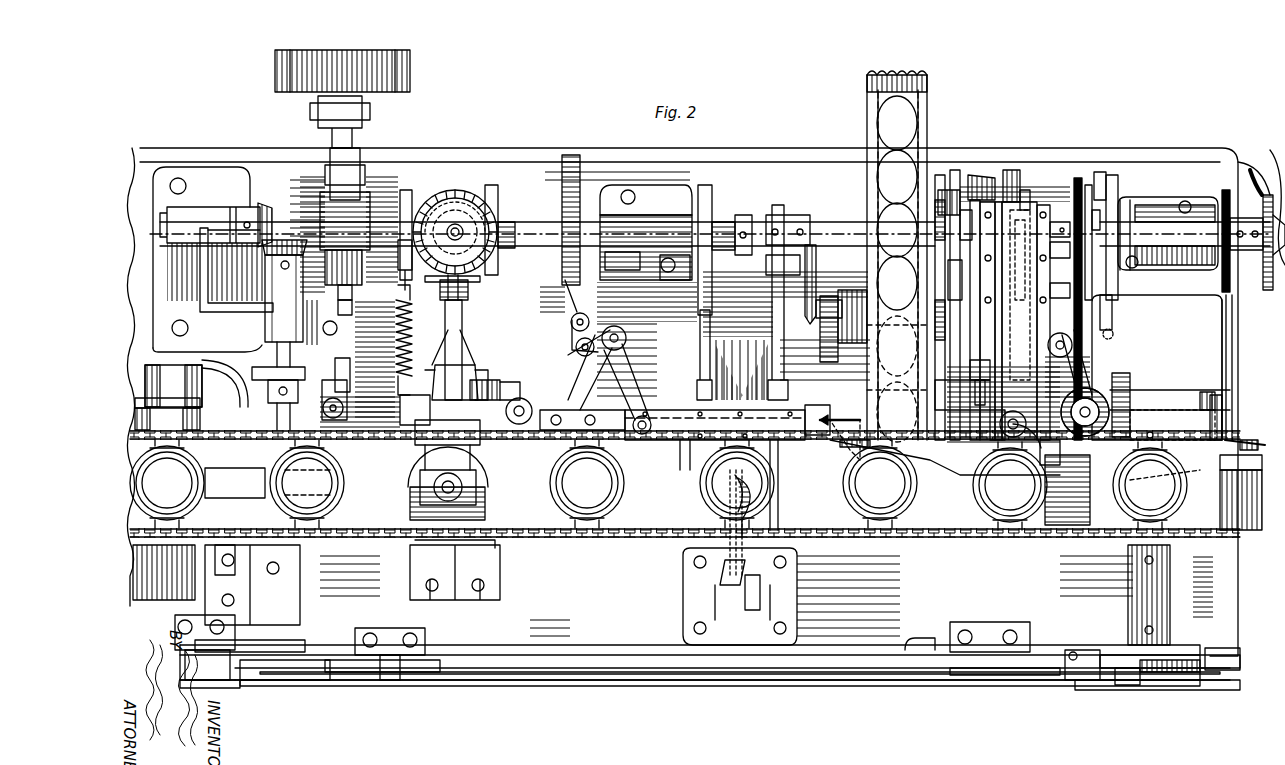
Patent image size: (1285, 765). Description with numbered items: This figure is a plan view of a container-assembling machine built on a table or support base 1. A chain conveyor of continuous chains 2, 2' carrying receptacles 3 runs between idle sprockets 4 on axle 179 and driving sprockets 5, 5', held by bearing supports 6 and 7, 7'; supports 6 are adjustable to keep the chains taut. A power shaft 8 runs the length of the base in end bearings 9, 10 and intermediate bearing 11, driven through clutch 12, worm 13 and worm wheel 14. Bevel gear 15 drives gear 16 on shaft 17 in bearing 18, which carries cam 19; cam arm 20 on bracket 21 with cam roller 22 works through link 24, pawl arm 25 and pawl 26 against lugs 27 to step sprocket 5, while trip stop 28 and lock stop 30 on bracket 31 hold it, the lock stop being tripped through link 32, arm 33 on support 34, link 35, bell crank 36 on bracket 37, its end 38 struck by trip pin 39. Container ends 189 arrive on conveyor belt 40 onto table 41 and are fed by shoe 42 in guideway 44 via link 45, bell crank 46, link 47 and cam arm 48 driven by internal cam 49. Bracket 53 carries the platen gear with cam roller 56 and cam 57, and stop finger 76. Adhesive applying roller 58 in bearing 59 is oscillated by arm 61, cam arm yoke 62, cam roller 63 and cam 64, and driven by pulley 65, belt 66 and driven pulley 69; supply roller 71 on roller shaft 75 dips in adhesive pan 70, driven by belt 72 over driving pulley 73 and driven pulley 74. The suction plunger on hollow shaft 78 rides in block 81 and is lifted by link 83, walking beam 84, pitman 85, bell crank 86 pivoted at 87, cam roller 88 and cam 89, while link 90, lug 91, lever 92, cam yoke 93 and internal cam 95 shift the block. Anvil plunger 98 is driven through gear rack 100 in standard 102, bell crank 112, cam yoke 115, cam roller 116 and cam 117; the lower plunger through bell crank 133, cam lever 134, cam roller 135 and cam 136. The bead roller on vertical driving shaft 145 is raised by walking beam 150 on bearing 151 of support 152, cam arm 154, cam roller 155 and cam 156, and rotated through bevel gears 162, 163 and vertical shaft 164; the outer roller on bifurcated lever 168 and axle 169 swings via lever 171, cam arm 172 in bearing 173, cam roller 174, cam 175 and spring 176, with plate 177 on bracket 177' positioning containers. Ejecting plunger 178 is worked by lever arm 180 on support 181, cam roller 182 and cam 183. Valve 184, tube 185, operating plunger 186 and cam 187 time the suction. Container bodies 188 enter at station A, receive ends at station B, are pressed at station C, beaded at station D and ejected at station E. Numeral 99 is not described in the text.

The table or support base 1 is at (657, 640).
The continuous chain 2 is at (686, 508).
The receptacle 3 is at (625, 483).
The idle sprocket 4 is at (150, 415).
The driving sprocket 5 is at (1241, 525).
The bearing support 6 is at (165, 372).
The bearing support 7 is at (1185, 595).
The power shaft 8 is at (515, 230).
The end bearing 9 is at (213, 215).
The end bearing 10 is at (1165, 220).
The intermediate bearing 11 is at (624, 190).
The clutch 12 is at (410, 70).
The worm 13 is at (370, 180).
The worm wheel 14 is at (355, 268).
The bevel gear 15 is at (262, 208).
The gear 16 is at (288, 240).
The shaft 17 is at (275, 345).
The bearing 18 is at (268, 283).
The cam 19 is at (290, 680).
The cam arm 20 is at (200, 680).
The bracket 21 is at (240, 630).
The cam roller 22 is at (205, 632).
The link 24 is at (348, 690).
The pawl arm 25 is at (1115, 690).
The pawl 26 is at (1092, 655).
The projecting lug 27 is at (1140, 690).
The trip stop 28 is at (1240, 634).
The lock stop 30 is at (1074, 652).
The bracket 31 is at (1080, 692).
The link 32 is at (1005, 675).
The arm 33 is at (910, 645).
The support 34 is at (1030, 640).
The link 35 is at (500, 673).
The bell crank 36 is at (405, 664).
The bracket 37 is at (425, 637).
The end of bell crank 38 is at (372, 665).
The trip pin 39 is at (230, 688).
The conveyor belt 40 is at (868, 80).
The table 41 is at (950, 452).
The shoe 42 is at (808, 405).
The guideway 44 is at (668, 410).
The link 45 is at (648, 415).
The bell crank 46 is at (586, 358).
The link 47 is at (575, 345).
The cam arm 48 is at (565, 323).
The internal cam 49 is at (572, 158).
The bracket 53 is at (1043, 205).
The cam roller 56 is at (985, 178).
The cam 57 is at (975, 195).
The adhesive applying roller 58 is at (1097, 392).
The bearing 59 is at (1072, 350).
The arm 61 is at (1115, 330).
The cam arm yoke 62 is at (1112, 175).
The cam roller 63 is at (1100, 172).
The cam 64 is at (1095, 210).
The pulley 65 is at (1074, 180).
The belt 66 is at (1087, 185).
The driven pulley 69 is at (1132, 390).
The adhesive pan 70 is at (1202, 318).
The adhesive supply roller 71 is at (1128, 385).
The belt 72 is at (1232, 330).
The driving pulley 73 is at (1232, 197).
The driven pulley 74 is at (1228, 420).
The roller shaft 75 is at (1170, 400).
The stop finger 76 is at (1058, 455).
The hollow shaft 78 is at (1000, 436).
The block 81 is at (1010, 368).
The link 83 is at (992, 440).
The walking beam 84 is at (1005, 376).
The pitman 85 is at (960, 298).
The bell crank 86 is at (935, 352).
The pivot 87 is at (968, 210).
The cam roller 88 is at (945, 190).
The cam 89 is at (955, 200).
The link 90 is at (1040, 268).
The lug 91 is at (1060, 222).
The lever 92 is at (1042, 290).
The cam yoke 93 is at (1024, 190).
The internal cam 95 is at (1010, 170).
The anvil plunger 98 is at (718, 494).
The spout 99 is at (725, 495).
The gear rack 100 is at (720, 560).
The standard 102 is at (735, 578).
The bell crank 112 is at (785, 468).
The cam yoke 115 is at (778, 205).
The cam roller 116 is at (810, 245).
The cam 117 is at (795, 215).
The bell crank 133 is at (690, 466).
The cam lever 134 is at (706, 185).
The cam roller 135 is at (715, 222).
The cam 136 is at (738, 215).
The vertical driving shaft 145 is at (442, 495).
The walking beam 150 is at (420, 482).
The bearing 151 is at (478, 370).
The support 152 is at (462, 320).
The cam arm 154 is at (470, 290).
The cam roller 155 is at (515, 250).
The cam 156 is at (490, 185).
The bevel gear 162 is at (440, 195).
The bevel gear 163 is at (455, 190).
The vertical shaft 164 is at (458, 228).
The bifurcated lever 168 is at (506, 382).
The axle 169 is at (528, 395).
The lever 171 is at (400, 412).
The cam arm 172 is at (352, 290).
The bearing 173 is at (370, 300).
The cam roller 174 is at (412, 262).
The cam 175 is at (406, 190).
The helical tension spring 176 is at (395, 327).
The plate 177 is at (685, 493).
The bracket 177' is at (489, 574).
The ejecting plunger 178 is at (232, 478).
The axle 179 is at (200, 595).
The lever arm 180 is at (333, 392).
The support 181 is at (340, 410).
The cam roller 182 is at (340, 358).
The cam 183 is at (262, 366).
The valve 184 is at (1250, 150).
The tube 185 is at (1250, 170).
The operating plunger 186 is at (1270, 135).
The cam 187 is at (1262, 283).
The container body 188 is at (905, 498).
The container end 189 is at (905, 110).
The continuous chain 2' is at (934, 437).
The driving sprocket 5' is at (1245, 435).
The bearing support 7' is at (1249, 413).
The station A is at (1145, 491).
The station B is at (1005, 491).
The station C is at (820, 557).
The station D is at (514, 561).
The station E is at (216, 485).